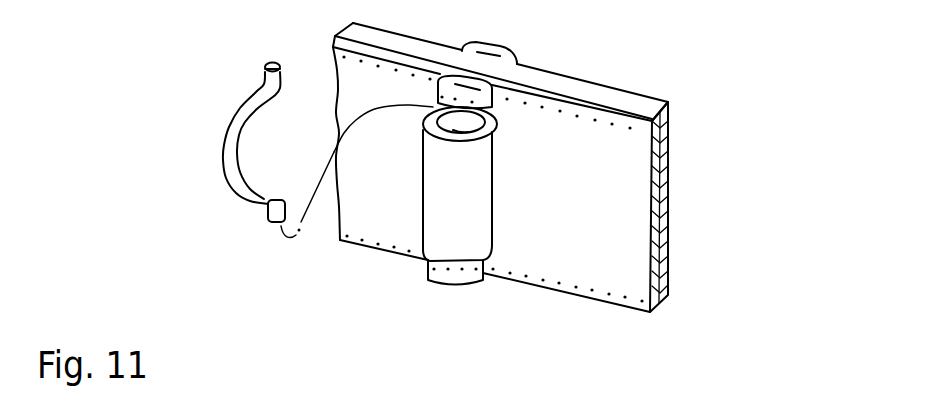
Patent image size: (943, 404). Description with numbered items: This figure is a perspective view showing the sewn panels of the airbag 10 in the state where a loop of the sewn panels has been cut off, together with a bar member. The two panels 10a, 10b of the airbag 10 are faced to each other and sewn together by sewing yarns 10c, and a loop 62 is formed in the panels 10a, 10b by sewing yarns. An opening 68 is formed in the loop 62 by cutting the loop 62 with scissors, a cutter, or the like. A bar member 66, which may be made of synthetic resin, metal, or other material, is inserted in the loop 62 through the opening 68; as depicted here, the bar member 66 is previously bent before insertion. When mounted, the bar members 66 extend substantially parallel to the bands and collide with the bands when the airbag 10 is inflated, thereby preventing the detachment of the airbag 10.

The airbag 10 is at (774, 148).
The panel 10a is at (671, 157).
The panel 10b is at (632, 212).
The sewing yarns 10c is at (595, 121).
The loop 62 is at (476, 192).
The bar member 66 is at (255, 102).
The opening 68 is at (446, 130).